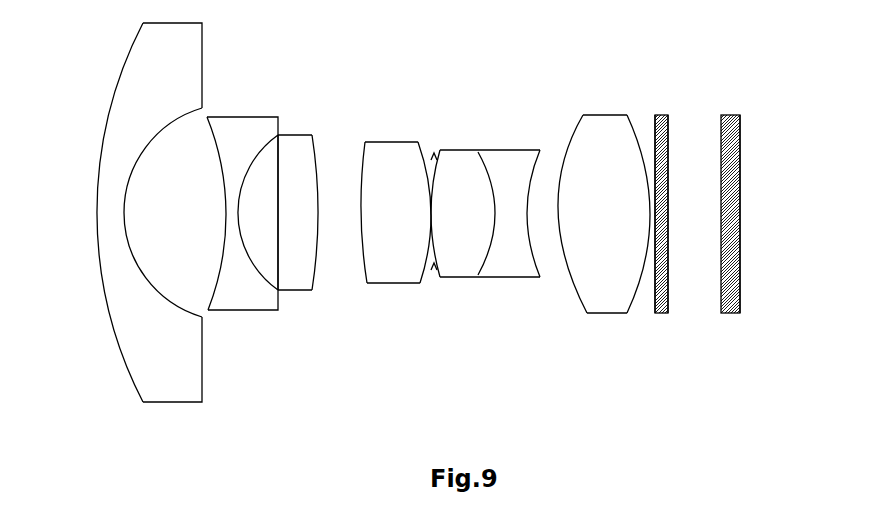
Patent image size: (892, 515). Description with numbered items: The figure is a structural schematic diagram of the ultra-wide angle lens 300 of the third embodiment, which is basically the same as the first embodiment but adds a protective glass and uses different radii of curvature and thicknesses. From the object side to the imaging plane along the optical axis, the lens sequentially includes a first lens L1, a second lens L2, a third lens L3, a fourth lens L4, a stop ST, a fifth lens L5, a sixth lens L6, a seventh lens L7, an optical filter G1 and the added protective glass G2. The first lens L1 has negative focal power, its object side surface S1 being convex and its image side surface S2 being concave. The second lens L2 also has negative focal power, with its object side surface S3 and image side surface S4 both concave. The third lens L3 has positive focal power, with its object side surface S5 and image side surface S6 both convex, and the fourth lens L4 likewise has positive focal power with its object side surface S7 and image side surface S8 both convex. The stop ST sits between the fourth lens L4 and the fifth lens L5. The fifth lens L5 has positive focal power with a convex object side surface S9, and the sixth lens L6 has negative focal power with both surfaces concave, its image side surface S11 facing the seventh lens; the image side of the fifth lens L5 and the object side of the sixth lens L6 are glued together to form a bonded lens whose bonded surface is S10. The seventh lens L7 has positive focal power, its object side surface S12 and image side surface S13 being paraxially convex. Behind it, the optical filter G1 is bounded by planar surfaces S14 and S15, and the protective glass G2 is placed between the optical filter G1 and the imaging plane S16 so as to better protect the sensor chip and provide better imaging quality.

The ultra-wide angle lens 300 is at (90, 17).
The first lens L1 is at (141, 209).
The second lens L2 is at (242, 208).
The third lens L3 is at (301, 208).
The fourth lens L4 is at (394, 208).
The fifth lens L5 is at (491, 208).
The sixth lens L6 is at (538, 208).
The seventh lens L7 is at (618, 208).
The optical filter G1 is at (711, 208).
The protective glass G2 is at (767, 208).
The stop ST is at (434, 267).
The object side surface of the first lens S1 is at (100, 248).
The image side surface of the first lens S2 is at (123, 245).
The object side surface of the second lens S3 is at (226, 215).
The image side surface of the second lens S4 is at (243, 245).
The object side surface of the third lens S5 is at (278, 290).
The image side surface of the third lens S6 is at (317, 247).
The object side surface of the fourth lens S7 is at (362, 250).
The image side surface of the fourth lens S8 is at (428, 250).
The object side surface of the fifth lens S9 is at (440, 250).
The bonded surface S10 is at (492, 247).
The image side surface of the sixth lens S11 is at (528, 243).
The object side surface of the seventh lens S12 is at (563, 250).
The image side surface of the seventh lens S13 is at (650, 250).
The object side surface of the optical filter S14 is at (656, 248).
The image side surface of the optical filter S15 is at (667, 250).
The imaging plane S16 is at (738, 250).